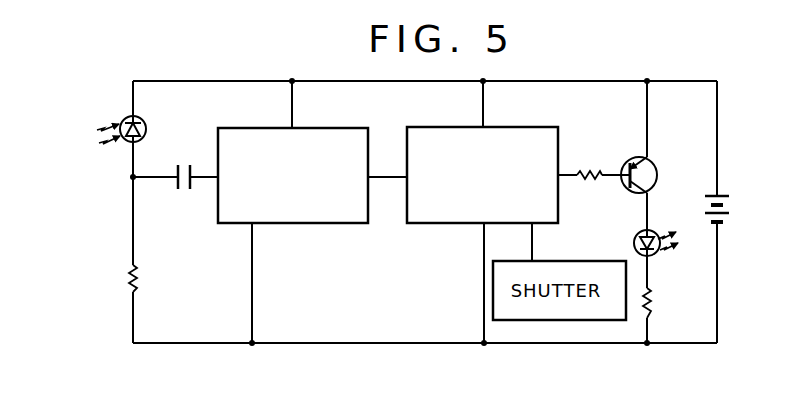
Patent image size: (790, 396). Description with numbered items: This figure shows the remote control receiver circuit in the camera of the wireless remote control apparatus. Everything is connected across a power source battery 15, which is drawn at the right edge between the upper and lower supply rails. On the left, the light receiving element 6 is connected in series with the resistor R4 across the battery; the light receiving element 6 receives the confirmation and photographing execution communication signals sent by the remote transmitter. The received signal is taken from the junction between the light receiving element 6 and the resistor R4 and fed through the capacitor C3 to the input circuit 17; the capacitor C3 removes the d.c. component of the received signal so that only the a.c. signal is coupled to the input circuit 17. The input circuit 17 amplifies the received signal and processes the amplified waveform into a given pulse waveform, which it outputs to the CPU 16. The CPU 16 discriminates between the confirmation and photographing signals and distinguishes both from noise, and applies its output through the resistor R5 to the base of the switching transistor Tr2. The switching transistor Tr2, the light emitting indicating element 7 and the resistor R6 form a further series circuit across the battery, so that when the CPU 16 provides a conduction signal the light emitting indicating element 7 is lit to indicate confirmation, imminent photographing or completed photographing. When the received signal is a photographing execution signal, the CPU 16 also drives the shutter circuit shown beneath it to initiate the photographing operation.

The light receiving element 6 is at (146, 127).
The light emitting indicating element 7 is at (634, 246).
The power source battery 15 is at (726, 196).
The CPU 16 is at (522, 138).
The input circuit 17 is at (328, 137).
The capacitor C3 is at (184, 189).
The resistor R4 is at (137, 276).
The resistor R5 is at (589, 168).
The resistor R6 is at (651, 303).
The switching transistor Tr2 is at (651, 163).